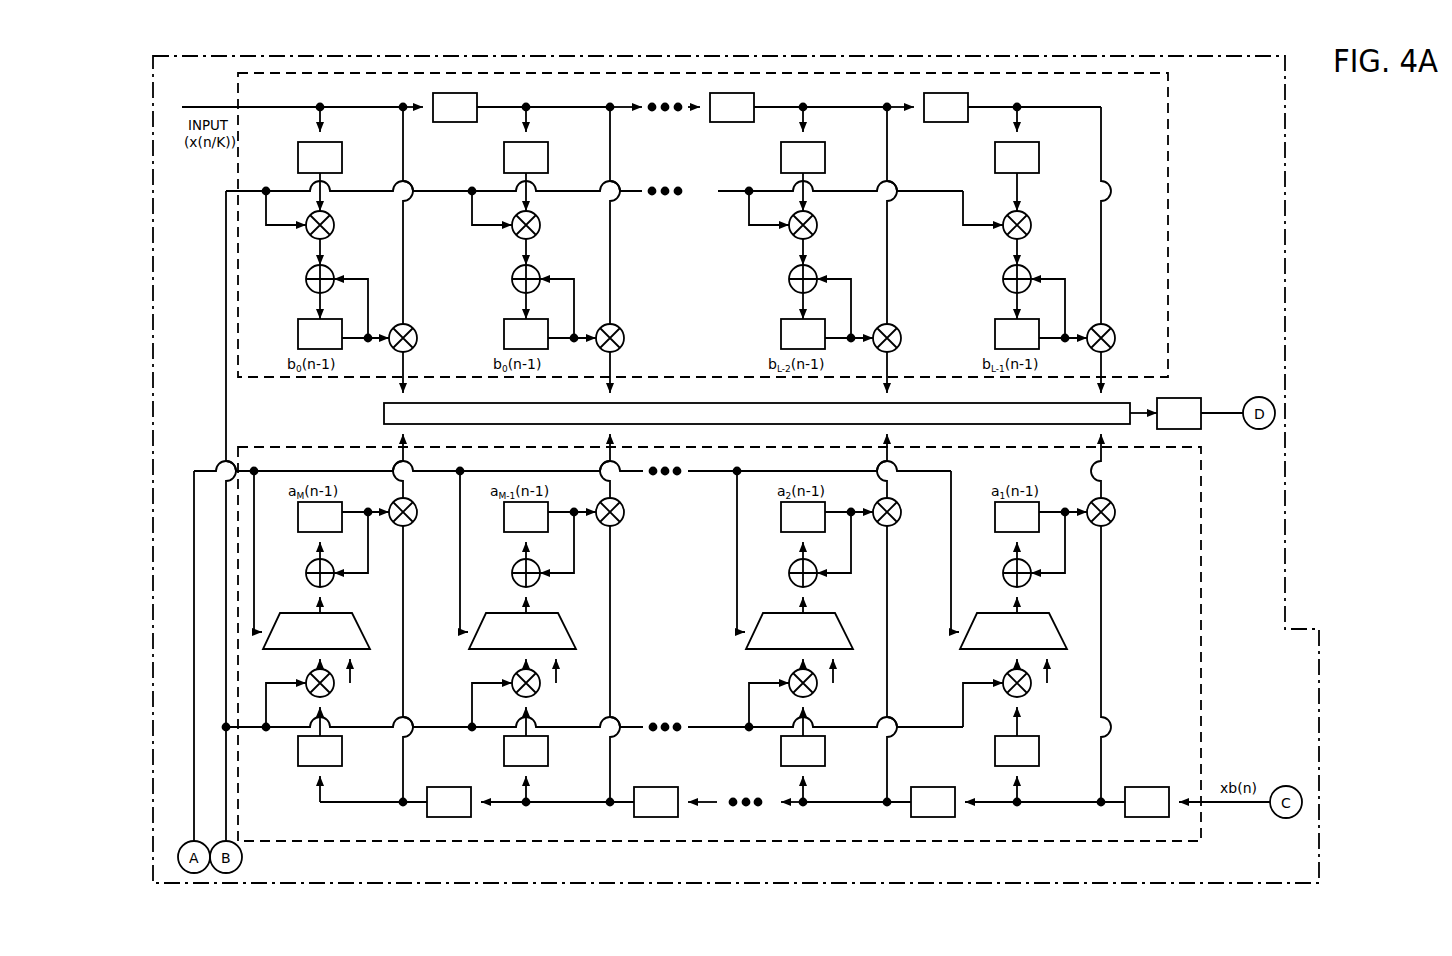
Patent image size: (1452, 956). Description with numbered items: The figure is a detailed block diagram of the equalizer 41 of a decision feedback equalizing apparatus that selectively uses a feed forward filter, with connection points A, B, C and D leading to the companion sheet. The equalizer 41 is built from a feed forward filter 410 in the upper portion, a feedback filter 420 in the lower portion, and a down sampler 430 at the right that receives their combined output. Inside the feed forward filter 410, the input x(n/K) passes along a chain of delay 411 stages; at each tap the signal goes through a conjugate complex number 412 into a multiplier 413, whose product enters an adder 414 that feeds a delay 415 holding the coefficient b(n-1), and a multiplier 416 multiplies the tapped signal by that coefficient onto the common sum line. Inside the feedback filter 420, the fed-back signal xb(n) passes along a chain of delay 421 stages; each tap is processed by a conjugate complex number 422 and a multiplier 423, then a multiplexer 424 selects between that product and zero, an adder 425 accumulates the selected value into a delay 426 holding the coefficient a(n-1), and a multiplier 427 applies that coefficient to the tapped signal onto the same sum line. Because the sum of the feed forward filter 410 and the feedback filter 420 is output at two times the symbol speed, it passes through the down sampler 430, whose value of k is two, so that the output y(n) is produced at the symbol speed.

The equalizer 41 is at (1285, 230).
The feed forward filter 410 is at (1168, 103).
The delay 411 is at (477, 100).
The conjugate complex number 412 is at (331, 142).
The multiplier 413 is at (330, 215).
The adder 414 is at (329, 268).
The delay 415 is at (306, 319).
The multiplier 416 is at (414, 329).
The feedback filter 420 is at (1201, 478).
The delay 421 is at (438, 787).
The conjugate complex number 422 is at (334, 766).
The multiplier 423 is at (308, 676).
The multiplexer 424 is at (340, 613).
The adder 425 is at (308, 566).
The delay 426 is at (332, 533).
The multiplier 427 is at (413, 503).
The down sampler 430 is at (1188, 398).